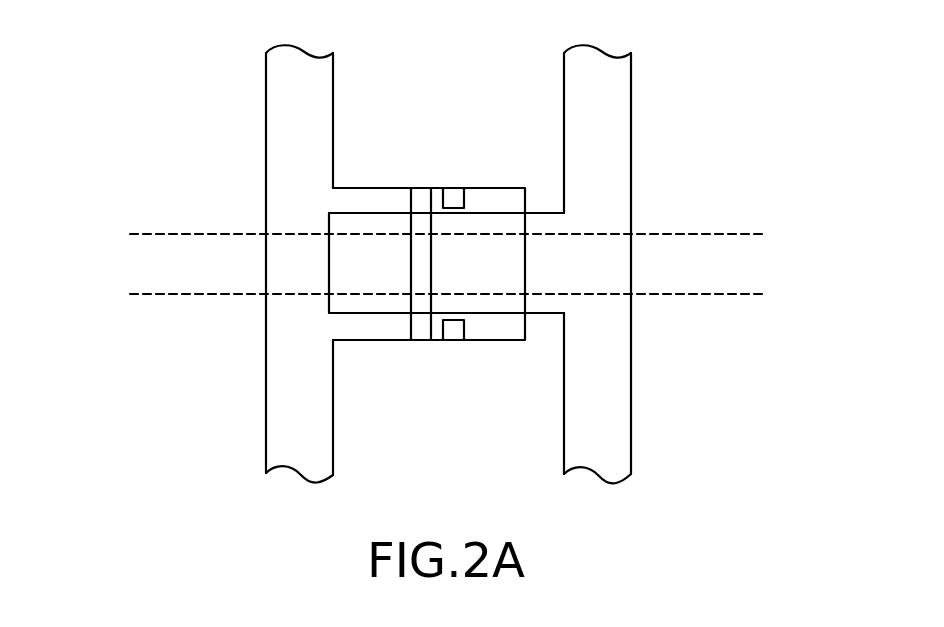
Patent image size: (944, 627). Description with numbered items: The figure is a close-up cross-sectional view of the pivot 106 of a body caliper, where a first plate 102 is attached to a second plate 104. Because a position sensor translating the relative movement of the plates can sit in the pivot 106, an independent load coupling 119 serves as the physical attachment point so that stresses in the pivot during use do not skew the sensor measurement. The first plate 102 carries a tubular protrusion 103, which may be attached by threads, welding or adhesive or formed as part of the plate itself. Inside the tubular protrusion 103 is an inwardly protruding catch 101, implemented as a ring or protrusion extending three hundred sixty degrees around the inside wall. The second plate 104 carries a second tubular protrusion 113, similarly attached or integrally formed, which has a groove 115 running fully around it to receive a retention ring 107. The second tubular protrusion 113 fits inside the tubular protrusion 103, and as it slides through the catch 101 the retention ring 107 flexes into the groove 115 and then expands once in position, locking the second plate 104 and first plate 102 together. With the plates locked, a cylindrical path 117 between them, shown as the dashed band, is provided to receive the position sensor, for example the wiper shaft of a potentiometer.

The catch 101 is at (457, 178).
The first plate 102 is at (290, 418).
The tubular protrusion 103 is at (372, 340).
The second plate 104 is at (608, 432).
The pivot 106 is at (545, 145).
The retention ring 107 is at (421, 200).
The second tubular protrusion 113 is at (545, 313).
The groove 115 is at (385, 248).
The cylindrical path 117 is at (118, 234).
The load coupling 119 is at (386, 108).